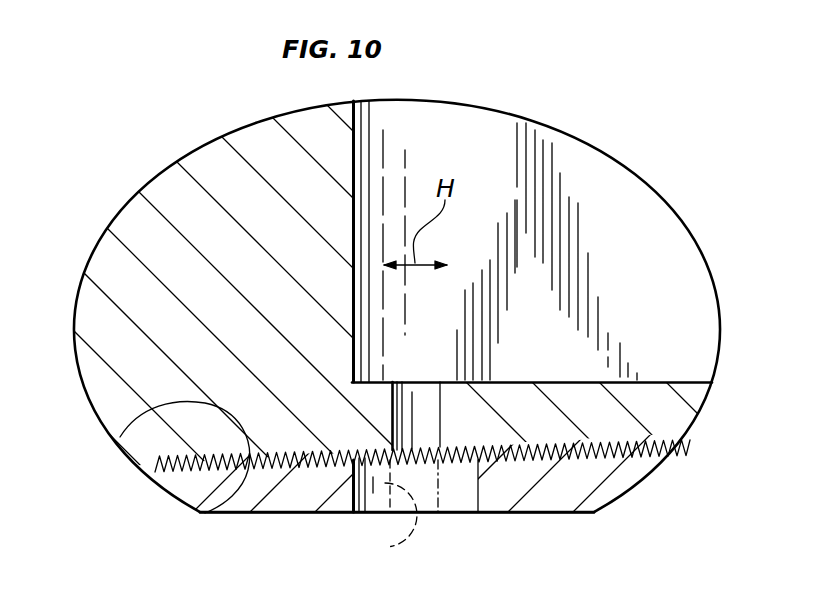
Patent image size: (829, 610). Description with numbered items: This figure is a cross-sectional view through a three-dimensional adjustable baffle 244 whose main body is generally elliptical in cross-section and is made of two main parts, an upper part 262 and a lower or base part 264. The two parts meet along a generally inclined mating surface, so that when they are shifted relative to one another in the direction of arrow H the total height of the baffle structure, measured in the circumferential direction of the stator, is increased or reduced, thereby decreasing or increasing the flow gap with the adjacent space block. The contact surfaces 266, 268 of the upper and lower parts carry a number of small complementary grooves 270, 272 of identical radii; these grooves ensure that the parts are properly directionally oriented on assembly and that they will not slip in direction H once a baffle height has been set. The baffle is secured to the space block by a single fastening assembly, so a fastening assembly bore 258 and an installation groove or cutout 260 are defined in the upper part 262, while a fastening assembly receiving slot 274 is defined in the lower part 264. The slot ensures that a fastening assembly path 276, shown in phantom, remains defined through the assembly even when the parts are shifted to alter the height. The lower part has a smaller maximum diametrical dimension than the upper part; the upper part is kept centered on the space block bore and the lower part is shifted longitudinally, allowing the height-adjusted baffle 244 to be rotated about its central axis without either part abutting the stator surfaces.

The three-dimensional adjustable baffle 244 is at (690, 180).
The fastening assembly bore 258 is at (437, 403).
The installation groove or cutout 260 is at (692, 334).
The upper part 262 is at (163, 188).
The lower or base part 264 is at (290, 495).
The contact surface of upper part 266 is at (673, 437).
The contact surface of lower part 268 is at (673, 447).
The grooves of upper part 270 is at (153, 470).
The grooves of lower part 272 is at (210, 512).
The fastening assembly receiving slot 274 is at (478, 500).
The fastening assembly path 276 is at (386, 519).